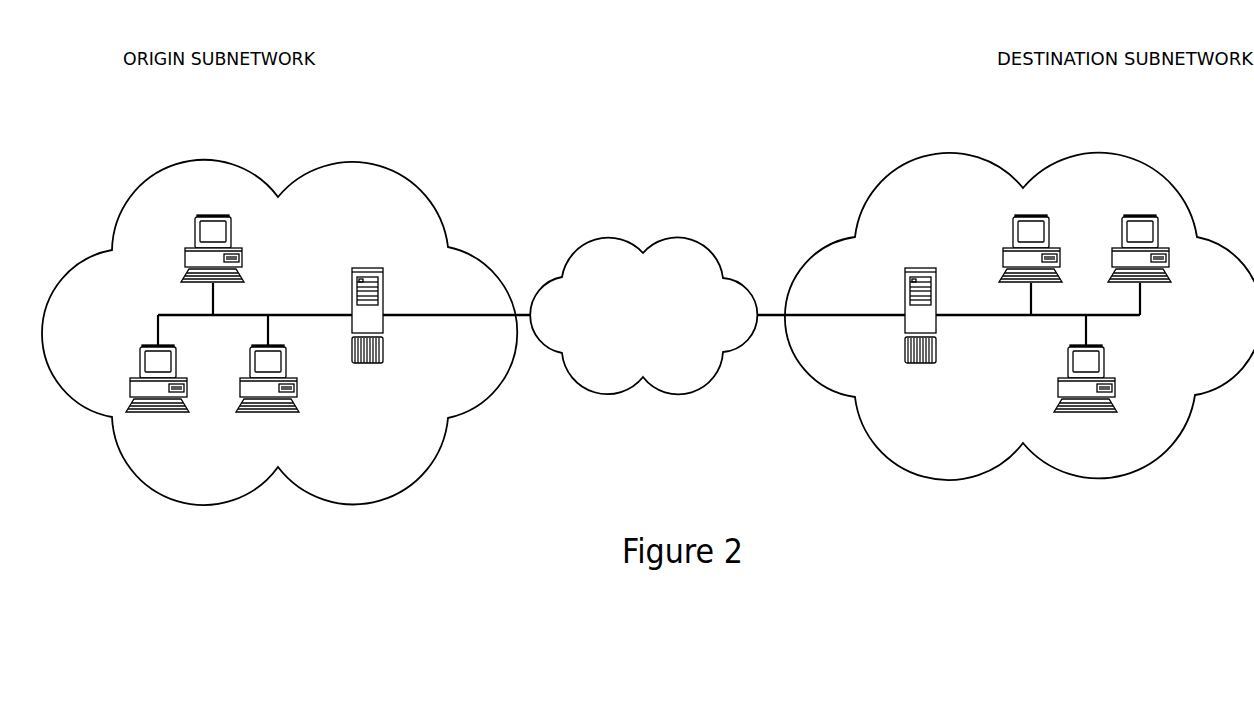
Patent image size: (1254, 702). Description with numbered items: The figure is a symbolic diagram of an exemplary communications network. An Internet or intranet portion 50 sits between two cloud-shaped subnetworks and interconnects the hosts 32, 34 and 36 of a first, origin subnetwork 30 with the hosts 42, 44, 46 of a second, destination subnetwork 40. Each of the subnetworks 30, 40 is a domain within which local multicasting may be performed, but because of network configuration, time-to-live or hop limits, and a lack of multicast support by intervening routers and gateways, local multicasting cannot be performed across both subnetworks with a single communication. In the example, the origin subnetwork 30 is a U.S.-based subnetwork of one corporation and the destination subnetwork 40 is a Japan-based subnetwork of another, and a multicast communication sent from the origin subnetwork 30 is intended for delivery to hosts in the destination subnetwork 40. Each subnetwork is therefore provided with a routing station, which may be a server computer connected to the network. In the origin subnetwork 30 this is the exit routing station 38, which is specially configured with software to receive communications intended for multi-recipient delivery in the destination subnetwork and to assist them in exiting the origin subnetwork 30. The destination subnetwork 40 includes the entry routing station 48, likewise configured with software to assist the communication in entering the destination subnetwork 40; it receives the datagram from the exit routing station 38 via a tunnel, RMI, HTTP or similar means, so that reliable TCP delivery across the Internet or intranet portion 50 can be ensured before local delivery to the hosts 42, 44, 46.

The origin subnetwork 30 is at (392, 173).
The host 32 is at (184, 260).
The host 34 is at (130, 388).
The host 36 is at (283, 414).
The exit routing station 38 is at (352, 290).
The destination subnetwork 40 is at (1133, 162).
The host 42 is at (1003, 260).
The host 44 is at (1169, 260).
The host 46 is at (1115, 388).
The entry routing station 48 is at (905, 290).
The Internet or intranet portion 50 is at (697, 242).